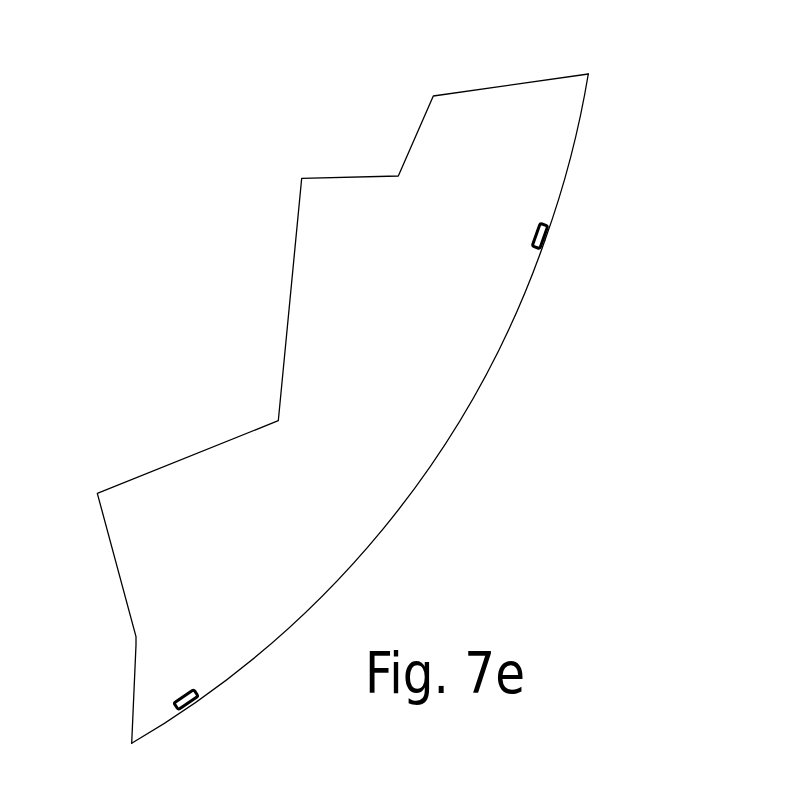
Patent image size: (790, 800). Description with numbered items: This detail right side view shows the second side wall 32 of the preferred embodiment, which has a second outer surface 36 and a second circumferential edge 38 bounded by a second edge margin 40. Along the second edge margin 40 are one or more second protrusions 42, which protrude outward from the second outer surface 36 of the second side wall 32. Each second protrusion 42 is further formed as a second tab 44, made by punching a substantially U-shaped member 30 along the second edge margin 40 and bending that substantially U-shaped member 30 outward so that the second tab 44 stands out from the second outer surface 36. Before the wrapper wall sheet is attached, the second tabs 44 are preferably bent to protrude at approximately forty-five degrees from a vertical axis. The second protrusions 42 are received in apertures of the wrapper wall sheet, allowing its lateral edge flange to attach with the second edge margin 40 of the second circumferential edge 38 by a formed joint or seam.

The substantially U-shaped member 30 is at (405, 408).
The second side wall 32 is at (342, 408).
The second outer surface 36 is at (432, 392).
The second circumferential edge 38 is at (581, 118).
The second edge margin 40 is at (418, 468).
The second protrusion 42 is at (443, 466).
The second tab 44 is at (548, 232).